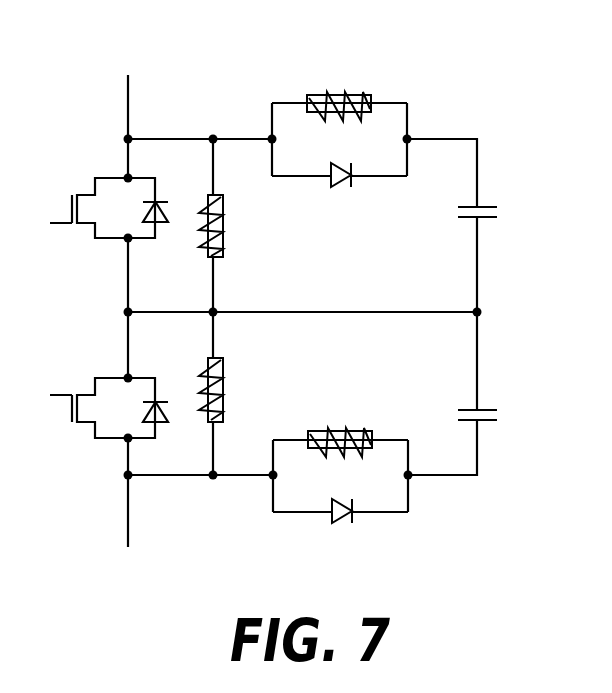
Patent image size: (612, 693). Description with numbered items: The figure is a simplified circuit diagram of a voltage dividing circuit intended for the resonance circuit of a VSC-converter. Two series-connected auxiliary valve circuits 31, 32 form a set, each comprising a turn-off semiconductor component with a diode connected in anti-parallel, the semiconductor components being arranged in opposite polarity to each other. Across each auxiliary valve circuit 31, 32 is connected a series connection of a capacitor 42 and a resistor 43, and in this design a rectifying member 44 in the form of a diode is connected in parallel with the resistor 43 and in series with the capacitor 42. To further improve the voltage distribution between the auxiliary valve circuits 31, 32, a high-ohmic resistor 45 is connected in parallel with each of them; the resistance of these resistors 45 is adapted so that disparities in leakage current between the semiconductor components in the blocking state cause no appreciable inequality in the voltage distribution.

The auxiliary valve circuit 31 is at (80, 160).
The auxiliary valve circuit 32 is at (76, 452).
The capacitor 42 is at (497, 207).
The resistor 43 is at (364, 92).
The rectifying member 44 is at (340, 190).
The high-ohmic resistor 45 is at (222, 222).